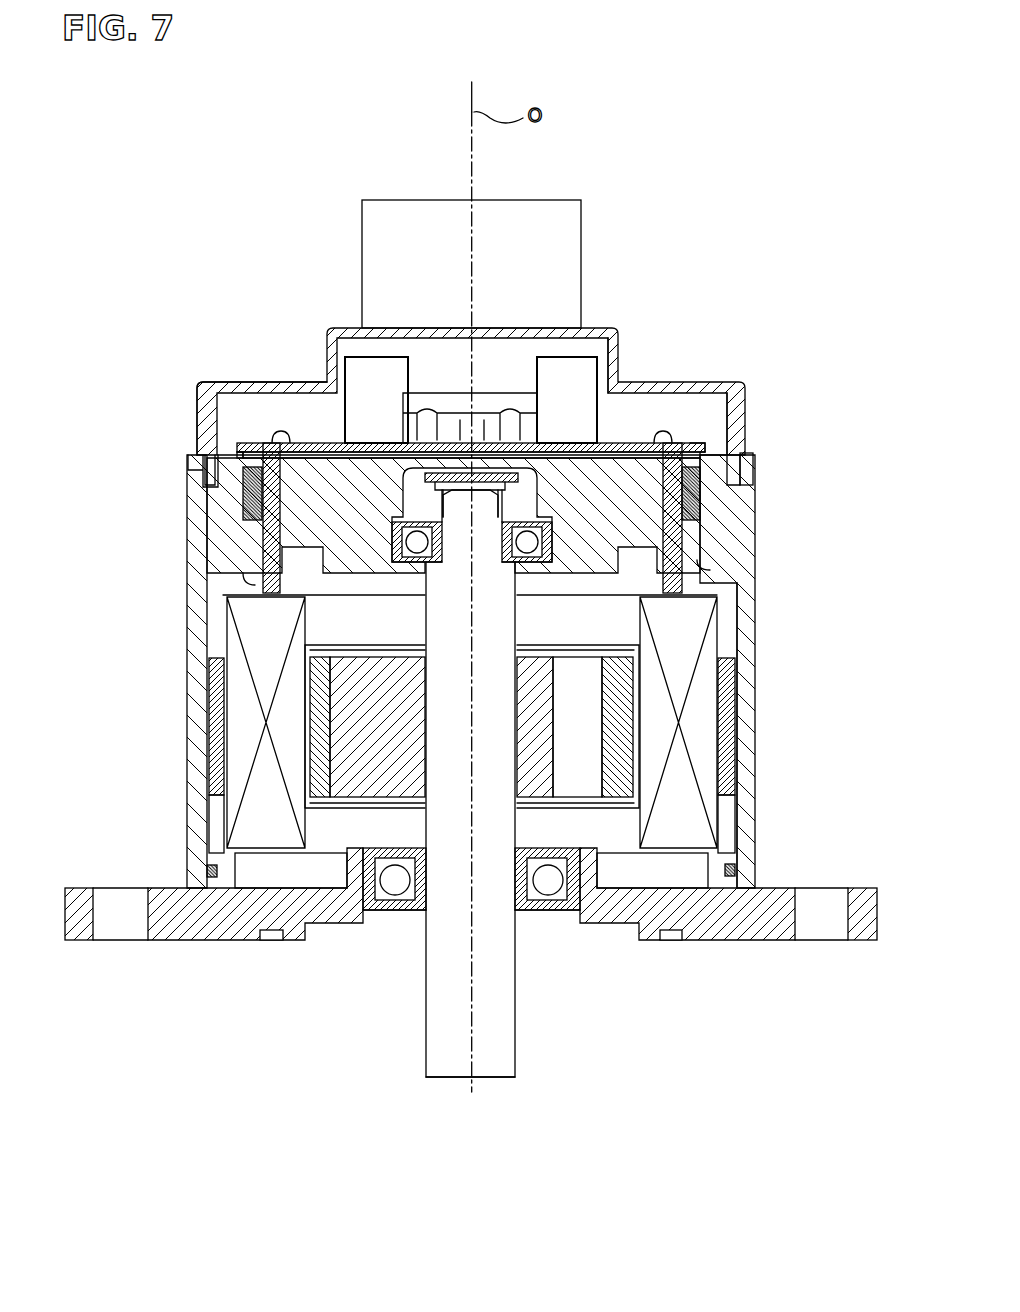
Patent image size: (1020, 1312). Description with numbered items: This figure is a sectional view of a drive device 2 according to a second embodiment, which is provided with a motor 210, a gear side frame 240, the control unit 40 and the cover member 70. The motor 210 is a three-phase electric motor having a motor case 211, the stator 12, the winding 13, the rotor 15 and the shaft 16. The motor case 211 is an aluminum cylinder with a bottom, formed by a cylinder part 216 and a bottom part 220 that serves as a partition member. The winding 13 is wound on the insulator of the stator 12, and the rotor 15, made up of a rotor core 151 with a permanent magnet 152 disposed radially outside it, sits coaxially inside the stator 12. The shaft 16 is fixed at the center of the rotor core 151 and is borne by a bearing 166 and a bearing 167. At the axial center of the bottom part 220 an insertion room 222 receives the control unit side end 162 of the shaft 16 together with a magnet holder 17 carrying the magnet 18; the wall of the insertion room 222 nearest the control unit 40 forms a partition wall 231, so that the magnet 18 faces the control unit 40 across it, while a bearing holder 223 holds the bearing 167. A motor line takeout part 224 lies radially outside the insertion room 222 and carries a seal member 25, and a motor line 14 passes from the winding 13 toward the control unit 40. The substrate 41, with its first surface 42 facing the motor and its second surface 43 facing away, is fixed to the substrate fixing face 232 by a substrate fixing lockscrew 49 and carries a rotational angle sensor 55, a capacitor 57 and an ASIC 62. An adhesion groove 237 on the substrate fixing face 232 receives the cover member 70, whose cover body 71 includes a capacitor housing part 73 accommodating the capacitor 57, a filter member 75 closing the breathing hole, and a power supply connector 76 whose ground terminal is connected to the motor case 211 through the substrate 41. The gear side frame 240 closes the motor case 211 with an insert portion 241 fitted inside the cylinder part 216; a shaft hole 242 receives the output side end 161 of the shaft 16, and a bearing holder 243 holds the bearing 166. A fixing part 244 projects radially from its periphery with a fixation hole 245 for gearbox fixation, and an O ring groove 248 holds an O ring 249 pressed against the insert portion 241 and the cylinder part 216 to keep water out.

The drive device 2 is at (278, 1150).
The stator 12 is at (728, 745).
The winding 13 is at (700, 775).
The motor line 14 is at (250, 446).
The rotor 15 is at (312, 737).
The shaft 16 is at (440, 1062).
The magnet holder 17 is at (500, 486).
The magnet 18 is at (480, 478).
The seal member 25 is at (250, 492).
The control unit 40 is at (702, 442).
The substrate 41 is at (313, 446).
The first surface 42 is at (215, 475).
The second surface 43 is at (236, 458).
The substrate fixing lockscrew 49 is at (281, 432).
The rotational angle sensor 55 is at (452, 478).
The capacitor 57 is at (355, 372).
The Application-Specific Integrated Circuit (ASIC) 62 is at (735, 470).
The cover member 70 is at (752, 378).
The cover body 71 is at (748, 400).
The capacitor housing part 73 is at (612, 340).
The filter member 75 is at (456, 430).
The power supply connector 76 is at (557, 228).
The rotor core 151 is at (325, 703).
The permanent magnet 152 is at (318, 765).
The output side end 161 is at (512, 1068).
The control unit side end 162 is at (397, 478).
The bearing 166 is at (385, 910).
The bearing 167 is at (400, 565).
The motor 210 is at (762, 620).
The motor case 211 is at (745, 660).
The cylinder part 216 is at (745, 710).
The bottom part 220 is at (750, 460).
The insertion room 222 is at (405, 540).
The bearing holder 223 is at (270, 570).
The motor line takeout part 224 is at (243, 584).
The partition wall 231 is at (375, 462).
The substrate fixing face 232 is at (226, 383).
The adhesion groove 237 is at (205, 445).
The gear side frame 240 is at (728, 930).
The insert portion 241 is at (215, 856).
The shaft hole 242 is at (548, 915).
The bearing holder 243 is at (578, 910).
The fixing part 244 is at (85, 930).
The fixation hole 245 is at (138, 925).
The O ring groove 248 is at (212, 872).
The O ring 249 is at (735, 870).